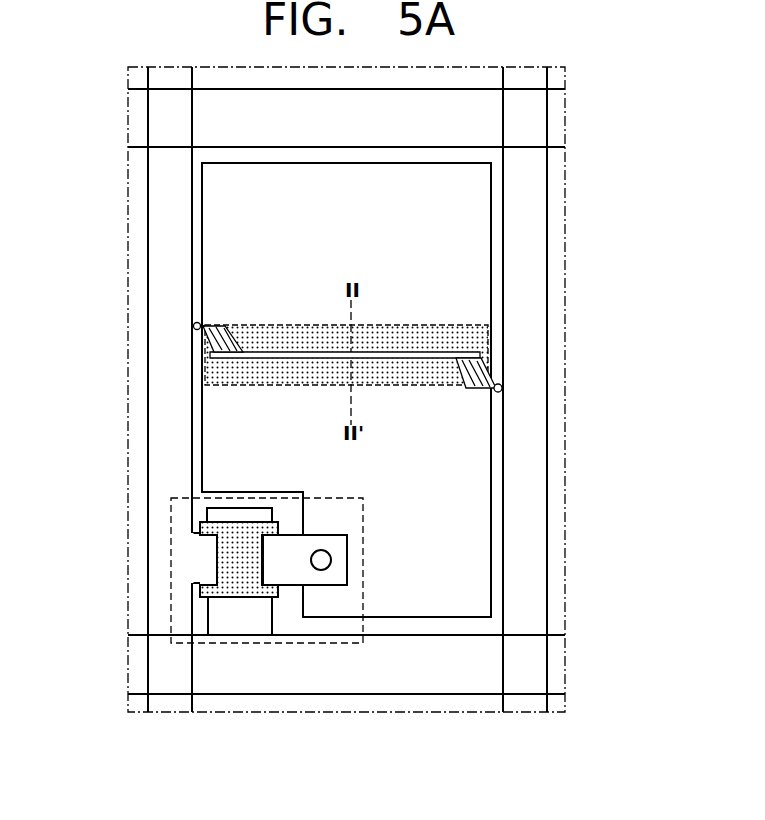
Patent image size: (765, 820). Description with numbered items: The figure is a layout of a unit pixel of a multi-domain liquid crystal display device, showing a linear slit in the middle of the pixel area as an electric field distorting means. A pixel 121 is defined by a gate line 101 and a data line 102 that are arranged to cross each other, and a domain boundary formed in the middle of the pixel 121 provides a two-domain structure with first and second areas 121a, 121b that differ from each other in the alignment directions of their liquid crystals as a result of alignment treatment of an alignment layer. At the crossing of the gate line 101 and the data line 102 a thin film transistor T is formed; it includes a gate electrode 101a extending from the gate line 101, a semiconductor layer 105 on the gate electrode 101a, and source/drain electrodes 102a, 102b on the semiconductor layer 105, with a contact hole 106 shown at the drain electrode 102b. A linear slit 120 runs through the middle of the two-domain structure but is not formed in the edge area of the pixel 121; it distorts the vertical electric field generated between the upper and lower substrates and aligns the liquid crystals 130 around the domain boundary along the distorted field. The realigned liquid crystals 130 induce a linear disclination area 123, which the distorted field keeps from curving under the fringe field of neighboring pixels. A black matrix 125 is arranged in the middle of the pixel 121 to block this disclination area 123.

The gate line 101 is at (423, 682).
The gate electrode 101a is at (222, 514).
The data line 102 is at (150, 380).
The source electrode 102a is at (195, 560).
The drain electrode 102b is at (283, 577).
The semiconductor layer 105 is at (229, 597).
The contact hole 106 is at (322, 570).
The slit 120 is at (438, 348).
The pixel 121 is at (497, 215).
The first area 121a is at (483, 268).
The second area 121b is at (488, 508).
The disclination area 123 is at (488, 368).
The black matrix 125 is at (488, 338).
The liquid crystals 130 is at (501, 390).
The thin film transistor T is at (167, 527).